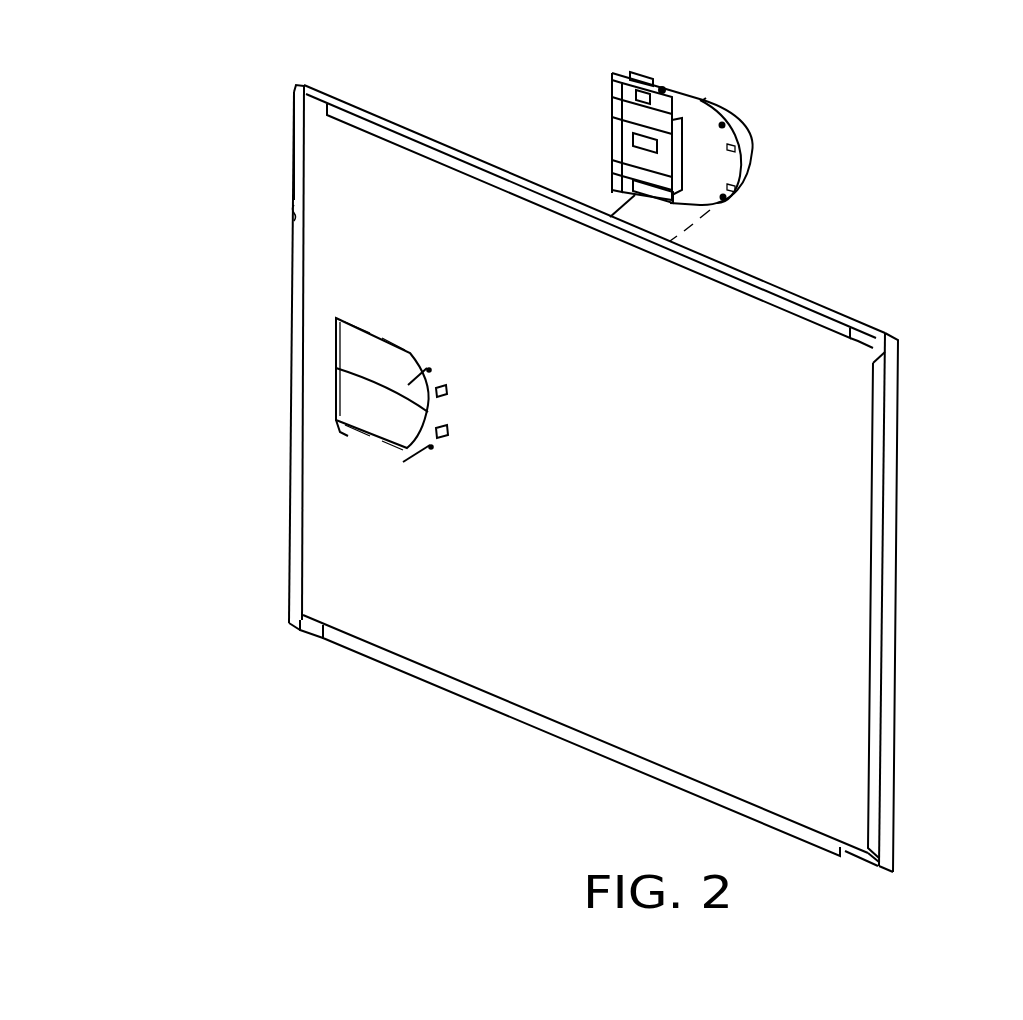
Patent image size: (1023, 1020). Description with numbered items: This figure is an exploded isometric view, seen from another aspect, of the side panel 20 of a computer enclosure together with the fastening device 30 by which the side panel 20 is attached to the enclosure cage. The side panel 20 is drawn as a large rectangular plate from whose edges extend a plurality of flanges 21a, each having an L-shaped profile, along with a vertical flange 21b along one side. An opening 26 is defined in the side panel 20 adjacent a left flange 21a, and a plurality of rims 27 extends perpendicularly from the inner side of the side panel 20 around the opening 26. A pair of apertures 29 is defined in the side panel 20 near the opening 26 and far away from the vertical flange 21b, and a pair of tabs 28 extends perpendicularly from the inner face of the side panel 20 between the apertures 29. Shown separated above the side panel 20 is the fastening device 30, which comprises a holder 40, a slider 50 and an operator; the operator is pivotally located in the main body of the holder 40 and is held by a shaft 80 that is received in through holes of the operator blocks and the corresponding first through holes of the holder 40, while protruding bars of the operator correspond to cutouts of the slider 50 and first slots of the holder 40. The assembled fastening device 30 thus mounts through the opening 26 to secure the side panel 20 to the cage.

The side panel 20 is at (841, 497).
The flanges 21a is at (762, 298).
The vertical flange 21b is at (298, 137).
The opening 26 is at (363, 358).
The rims 27 is at (353, 423).
The tabs 28 is at (412, 383).
The apertures 29 is at (362, 410).
The fastening device 30 is at (722, 92).
The holder 40 is at (647, 80).
The slider 50 is at (622, 122).
The shaft 80 is at (663, 86).